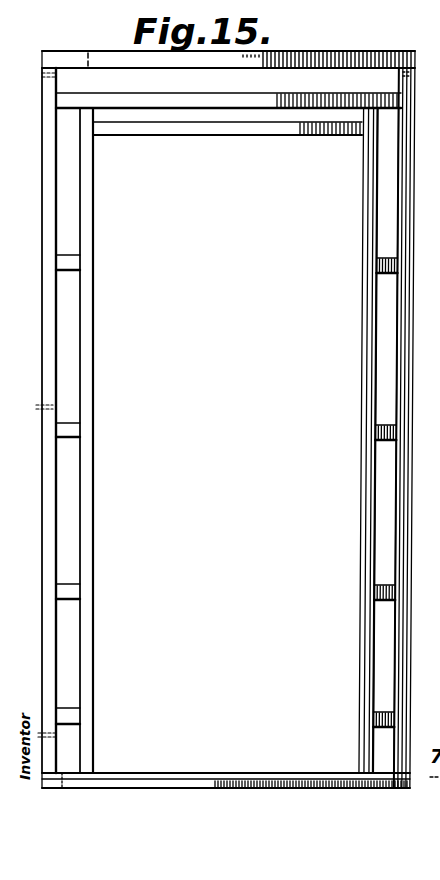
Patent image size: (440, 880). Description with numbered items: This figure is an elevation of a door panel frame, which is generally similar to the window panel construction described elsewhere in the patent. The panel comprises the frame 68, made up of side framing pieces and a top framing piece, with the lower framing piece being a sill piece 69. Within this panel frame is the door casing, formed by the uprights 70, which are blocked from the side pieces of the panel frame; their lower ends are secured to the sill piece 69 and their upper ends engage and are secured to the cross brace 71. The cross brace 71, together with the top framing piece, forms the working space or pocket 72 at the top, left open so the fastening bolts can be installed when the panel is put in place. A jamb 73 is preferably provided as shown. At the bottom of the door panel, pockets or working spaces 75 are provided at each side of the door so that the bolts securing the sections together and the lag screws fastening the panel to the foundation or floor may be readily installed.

The frame 68 is at (46, 352).
The sill piece 69 is at (211, 779).
The uprights 70 is at (85, 470).
The cross brace 71 is at (228, 102).
The working space or pocket 72 is at (228, 71).
The jamb 73 is at (297, 129).
The pockets or working spaces 75 is at (70, 754).